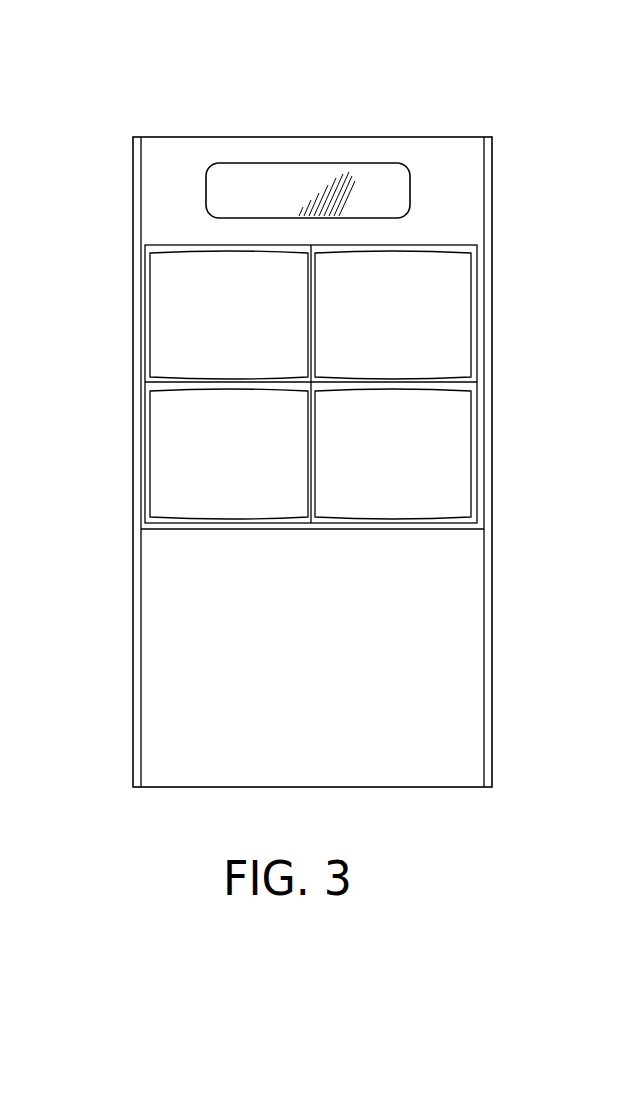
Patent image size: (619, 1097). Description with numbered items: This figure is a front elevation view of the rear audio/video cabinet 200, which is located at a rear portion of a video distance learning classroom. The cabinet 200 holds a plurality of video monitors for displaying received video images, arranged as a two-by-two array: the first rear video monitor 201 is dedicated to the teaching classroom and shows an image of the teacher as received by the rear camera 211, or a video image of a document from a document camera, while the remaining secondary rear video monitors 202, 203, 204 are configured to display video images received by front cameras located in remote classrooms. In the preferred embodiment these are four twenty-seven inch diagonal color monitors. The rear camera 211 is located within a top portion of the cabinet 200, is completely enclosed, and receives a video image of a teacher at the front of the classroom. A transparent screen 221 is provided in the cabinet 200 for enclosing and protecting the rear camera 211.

The rear audio/video cabinet 200 is at (184, 128).
The first rear video monitor 201 is at (168, 305).
The secondary rear video monitor 202 is at (172, 450).
The secondary rear video monitor 203 is at (452, 297).
The secondary rear video monitor 204 is at (450, 447).
The rear camera 211 is at (328, 172).
The transparent screen 221 is at (410, 196).